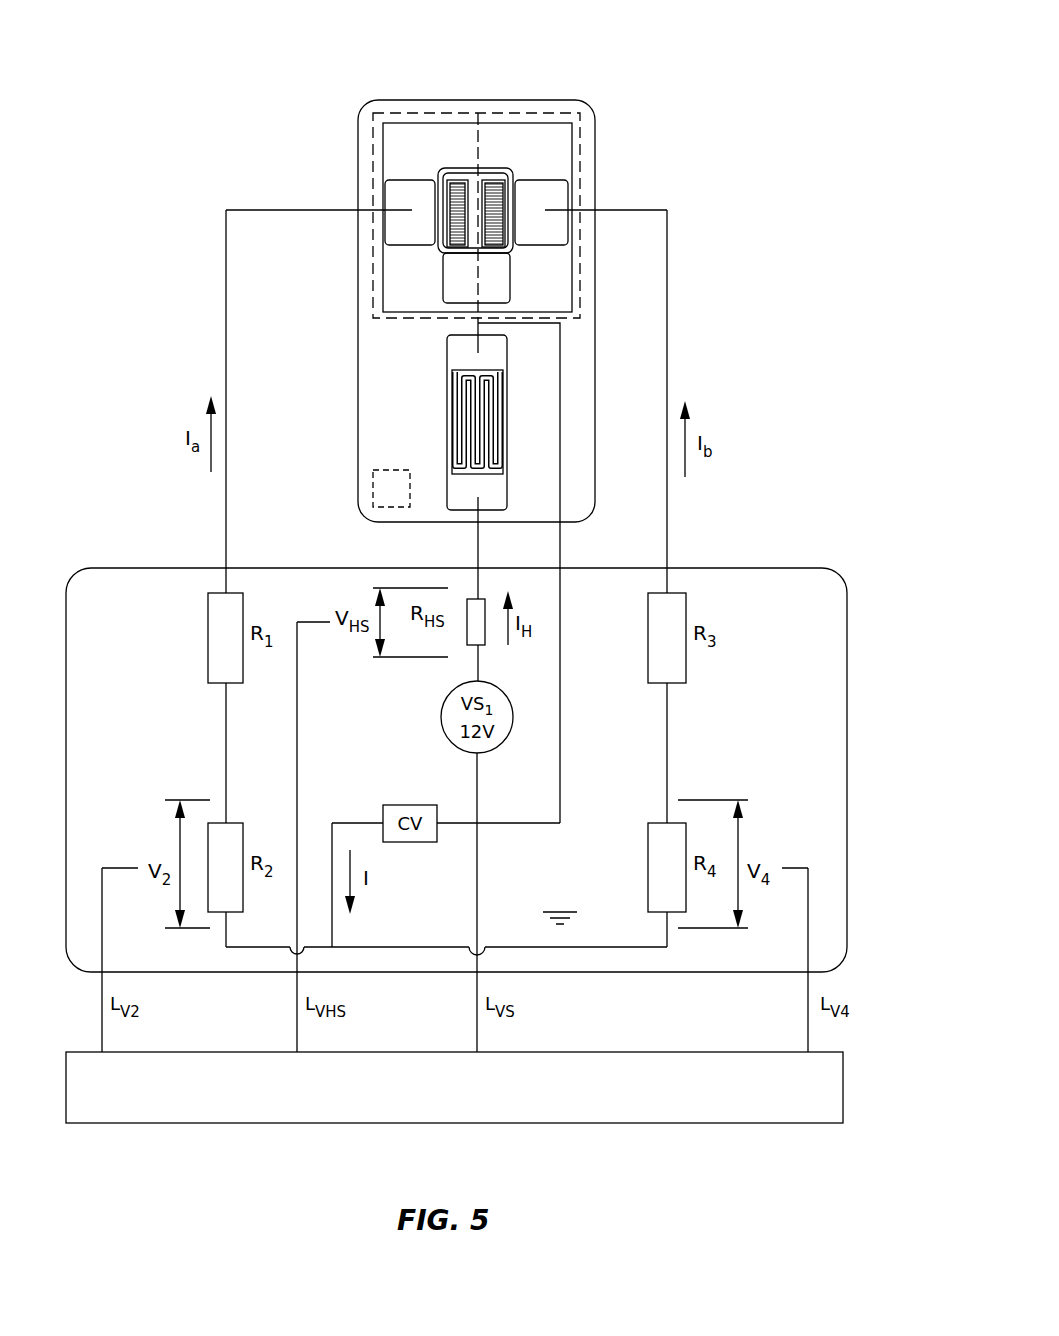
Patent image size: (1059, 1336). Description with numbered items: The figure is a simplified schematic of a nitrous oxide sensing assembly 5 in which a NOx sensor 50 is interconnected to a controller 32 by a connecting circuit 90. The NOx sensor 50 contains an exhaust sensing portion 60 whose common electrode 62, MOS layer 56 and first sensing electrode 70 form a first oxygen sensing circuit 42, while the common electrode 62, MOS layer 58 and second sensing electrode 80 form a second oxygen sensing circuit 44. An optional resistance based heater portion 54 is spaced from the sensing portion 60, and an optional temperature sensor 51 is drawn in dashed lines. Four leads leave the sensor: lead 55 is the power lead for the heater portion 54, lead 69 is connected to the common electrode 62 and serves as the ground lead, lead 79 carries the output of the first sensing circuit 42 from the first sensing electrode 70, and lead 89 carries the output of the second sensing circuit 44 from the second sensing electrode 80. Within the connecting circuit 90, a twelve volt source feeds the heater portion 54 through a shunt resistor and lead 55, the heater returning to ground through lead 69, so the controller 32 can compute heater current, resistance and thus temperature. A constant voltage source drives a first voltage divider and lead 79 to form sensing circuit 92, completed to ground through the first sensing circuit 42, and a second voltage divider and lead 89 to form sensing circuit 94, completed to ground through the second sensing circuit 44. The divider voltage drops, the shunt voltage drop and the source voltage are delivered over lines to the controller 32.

The NOx sensor assembly 5 is at (708, 70).
The controller 32 is at (454, 1087).
The first oxygen sensing circuit 42 is at (437, 112).
The second oxygen sensing circuit 44 is at (538, 112).
The NOx sensor 50 is at (402, 100).
The temperature sensor 51 is at (373, 478).
The heater portion 54 is at (447, 352).
The lead 55 is at (478, 512).
The MOS layer 56 is at (458, 182).
The MOS layer 58 is at (490, 182).
The exhaust sensing portion 60 is at (383, 138).
The common electrode 62 is at (443, 273).
The lead 69 is at (530, 330).
The first sensing electrode 70 is at (408, 180).
The lead 79 is at (370, 210).
The second sensing electrode 80 is at (548, 178).
The lead 89 is at (587, 210).
The connecting circuit 90 is at (770, 568).
The sensing circuit 92 is at (226, 302).
The sensing circuit 94 is at (667, 275).